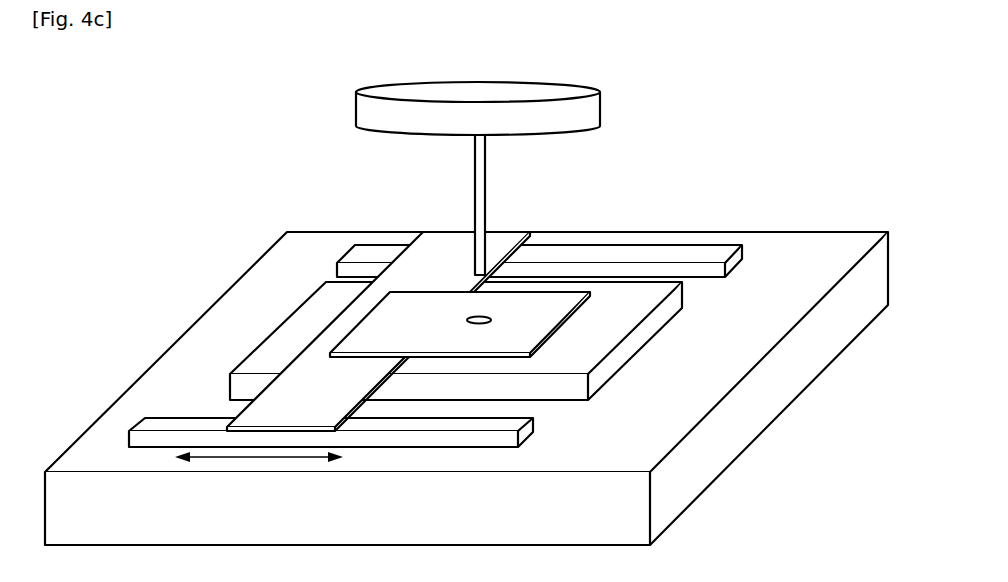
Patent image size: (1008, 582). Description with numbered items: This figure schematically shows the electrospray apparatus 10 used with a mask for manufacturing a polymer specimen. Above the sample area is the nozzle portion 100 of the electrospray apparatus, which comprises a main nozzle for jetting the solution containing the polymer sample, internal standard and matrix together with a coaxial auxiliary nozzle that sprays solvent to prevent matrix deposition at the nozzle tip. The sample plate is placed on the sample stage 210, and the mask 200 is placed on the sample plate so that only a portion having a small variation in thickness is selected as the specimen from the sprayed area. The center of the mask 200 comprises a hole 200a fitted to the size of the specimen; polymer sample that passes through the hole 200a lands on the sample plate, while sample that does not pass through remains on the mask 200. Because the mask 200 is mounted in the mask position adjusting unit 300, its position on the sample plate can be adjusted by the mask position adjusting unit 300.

The electrospray apparatus 10 is at (154, 104).
The nozzle portion 100 is at (478, 204).
The mask 200 is at (512, 322).
The hole 200a is at (479, 316).
The sample stage 210 is at (618, 333).
The mask position adjusting unit 300 is at (435, 443).